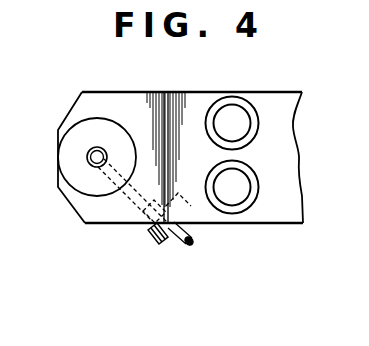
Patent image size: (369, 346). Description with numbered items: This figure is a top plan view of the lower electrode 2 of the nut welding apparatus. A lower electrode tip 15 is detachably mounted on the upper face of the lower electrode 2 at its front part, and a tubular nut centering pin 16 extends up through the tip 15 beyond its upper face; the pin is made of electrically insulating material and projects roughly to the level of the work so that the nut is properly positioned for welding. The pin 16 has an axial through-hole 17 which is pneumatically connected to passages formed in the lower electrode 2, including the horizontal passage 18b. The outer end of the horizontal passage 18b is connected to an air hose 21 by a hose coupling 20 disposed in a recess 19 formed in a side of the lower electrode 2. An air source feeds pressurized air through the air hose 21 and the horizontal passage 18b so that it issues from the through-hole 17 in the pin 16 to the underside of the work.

The lower electrode 2 is at (83, 196).
The lower electrode tip 15 is at (77, 177).
The nut centering pin 16 is at (88, 157).
The axial through-hole 17 is at (97, 147).
The horizontal passage 18b is at (129, 198).
The recess 19 is at (191, 206).
The hose coupling 20 is at (152, 238).
The air hose 21 is at (176, 244).